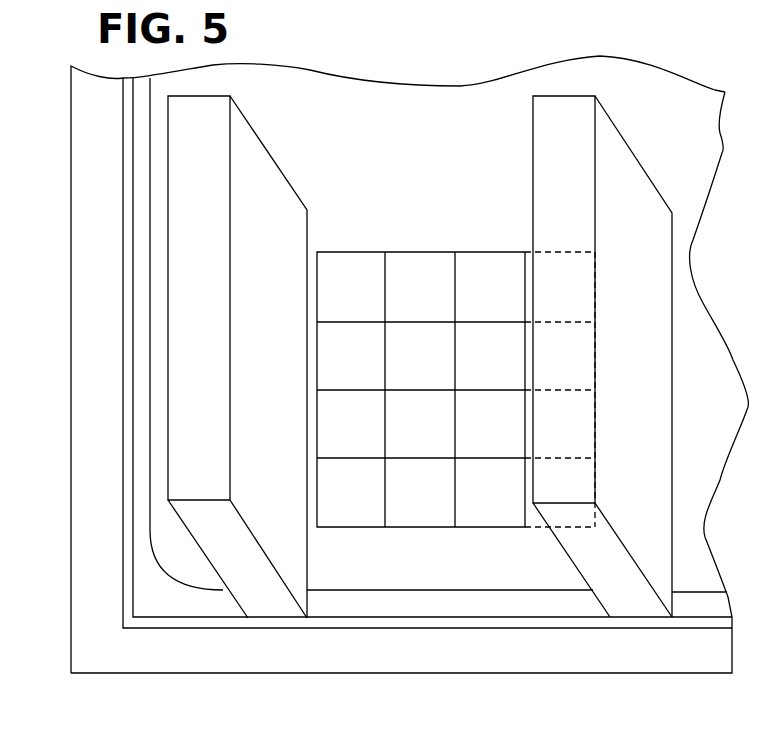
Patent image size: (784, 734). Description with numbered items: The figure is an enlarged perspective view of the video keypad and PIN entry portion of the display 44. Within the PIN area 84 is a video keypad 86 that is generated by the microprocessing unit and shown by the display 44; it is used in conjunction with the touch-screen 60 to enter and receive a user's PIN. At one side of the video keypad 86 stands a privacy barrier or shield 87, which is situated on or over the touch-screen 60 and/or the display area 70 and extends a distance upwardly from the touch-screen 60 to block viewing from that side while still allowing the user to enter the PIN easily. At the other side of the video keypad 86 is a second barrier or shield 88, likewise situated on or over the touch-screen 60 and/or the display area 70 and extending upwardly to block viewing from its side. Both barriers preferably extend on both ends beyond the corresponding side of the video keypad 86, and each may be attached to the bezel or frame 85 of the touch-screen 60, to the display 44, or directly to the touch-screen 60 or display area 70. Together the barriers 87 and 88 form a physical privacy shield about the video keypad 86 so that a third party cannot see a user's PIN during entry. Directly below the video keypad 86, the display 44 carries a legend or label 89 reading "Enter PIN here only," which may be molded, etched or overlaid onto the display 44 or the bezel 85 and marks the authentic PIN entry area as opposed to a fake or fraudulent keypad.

The display 44 is at (66, 155).
The touch-screen 60 is at (133, 324).
The display area 70 is at (127, 475).
The PIN area 84 is at (682, 180).
The bezel or frame 85 is at (150, 593).
The video keypad 86 is at (431, 232).
The privacy barrier or shield 87 is at (268, 168).
The barrier or shield 88 is at (643, 453).
The legend or label 89 is at (322, 652).